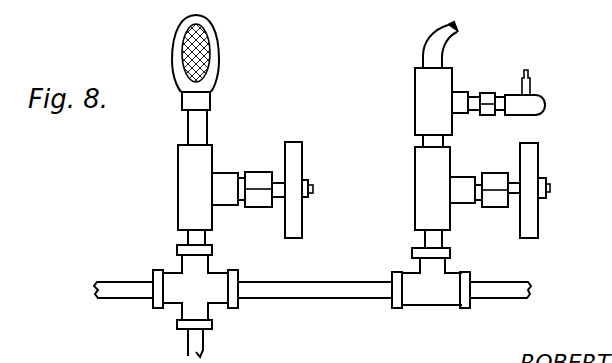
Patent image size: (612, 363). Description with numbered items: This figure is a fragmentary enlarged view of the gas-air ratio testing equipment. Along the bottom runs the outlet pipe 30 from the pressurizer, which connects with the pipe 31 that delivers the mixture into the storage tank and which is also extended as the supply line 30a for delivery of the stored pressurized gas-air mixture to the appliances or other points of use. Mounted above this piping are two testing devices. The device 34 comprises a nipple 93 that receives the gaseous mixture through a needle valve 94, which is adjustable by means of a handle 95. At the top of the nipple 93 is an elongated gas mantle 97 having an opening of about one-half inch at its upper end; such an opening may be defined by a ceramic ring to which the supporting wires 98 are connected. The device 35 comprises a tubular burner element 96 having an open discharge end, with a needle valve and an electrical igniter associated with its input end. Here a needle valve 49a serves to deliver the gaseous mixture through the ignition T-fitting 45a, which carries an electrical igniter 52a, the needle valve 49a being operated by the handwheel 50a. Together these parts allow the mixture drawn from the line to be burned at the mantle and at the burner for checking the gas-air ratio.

The pipe 30 is at (497, 298).
The supply line 30a is at (114, 282).
The pipe 31 is at (202, 338).
The device 34 is at (220, 160).
The device 35 is at (481, 129).
The ignition T-fitting 45a is at (427, 100).
The needle valve 49a is at (423, 181).
The handwheel 50a is at (533, 163).
The electrical igniter 52a is at (478, 115).
The nipple 93 is at (188, 122).
The needle valve 94 is at (178, 182).
The handle 95 is at (300, 141).
The tubular burner element 96 is at (436, 35).
The gas mantle 97 is at (210, 43).
The supporting wires 98 is at (172, 50).